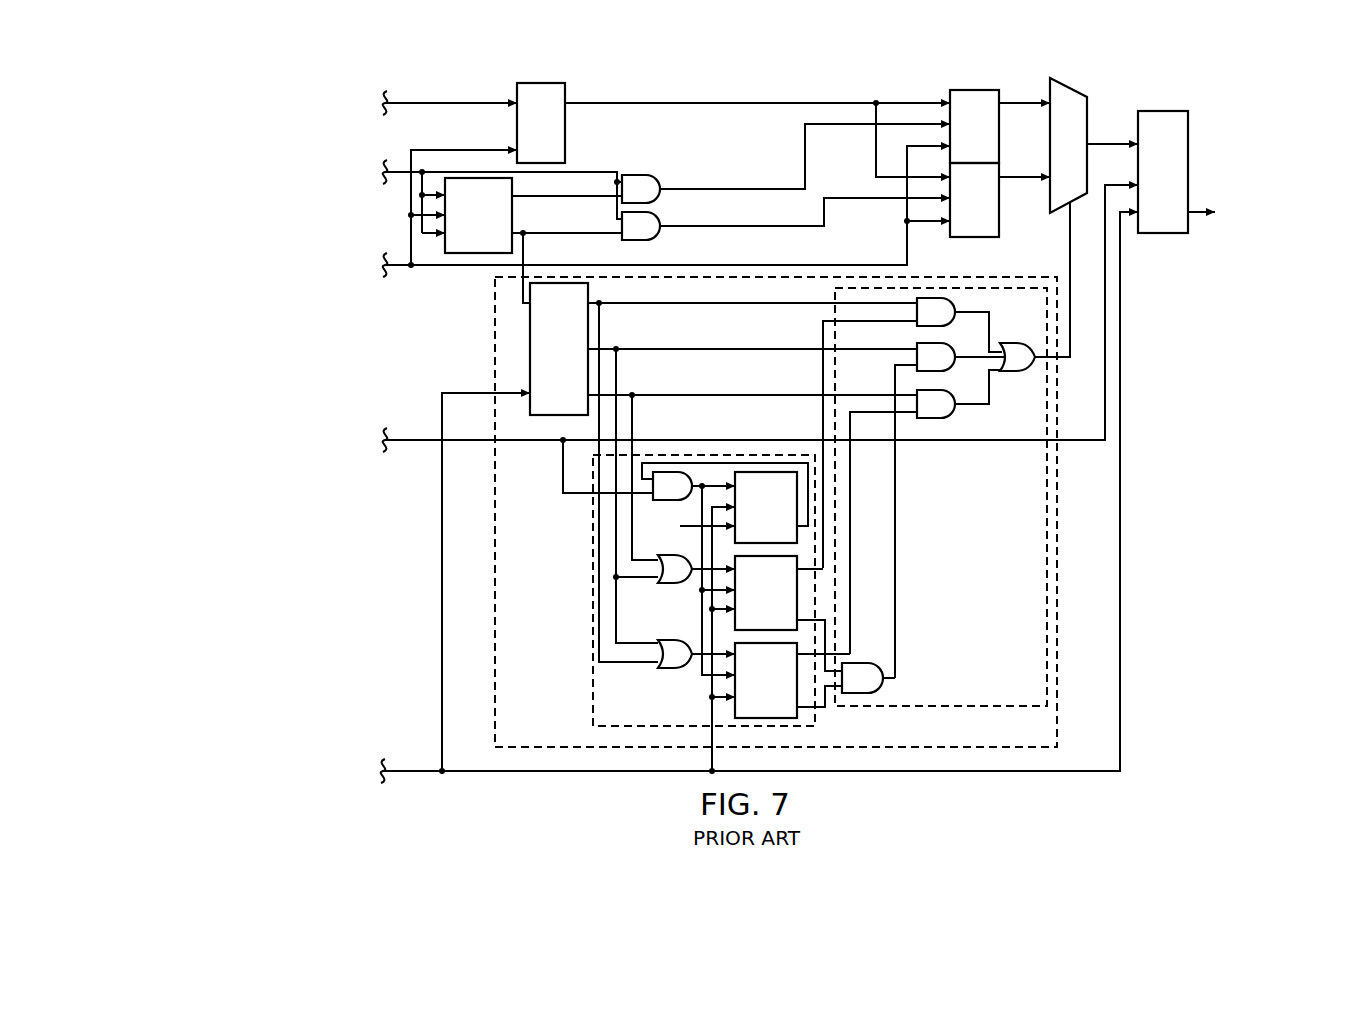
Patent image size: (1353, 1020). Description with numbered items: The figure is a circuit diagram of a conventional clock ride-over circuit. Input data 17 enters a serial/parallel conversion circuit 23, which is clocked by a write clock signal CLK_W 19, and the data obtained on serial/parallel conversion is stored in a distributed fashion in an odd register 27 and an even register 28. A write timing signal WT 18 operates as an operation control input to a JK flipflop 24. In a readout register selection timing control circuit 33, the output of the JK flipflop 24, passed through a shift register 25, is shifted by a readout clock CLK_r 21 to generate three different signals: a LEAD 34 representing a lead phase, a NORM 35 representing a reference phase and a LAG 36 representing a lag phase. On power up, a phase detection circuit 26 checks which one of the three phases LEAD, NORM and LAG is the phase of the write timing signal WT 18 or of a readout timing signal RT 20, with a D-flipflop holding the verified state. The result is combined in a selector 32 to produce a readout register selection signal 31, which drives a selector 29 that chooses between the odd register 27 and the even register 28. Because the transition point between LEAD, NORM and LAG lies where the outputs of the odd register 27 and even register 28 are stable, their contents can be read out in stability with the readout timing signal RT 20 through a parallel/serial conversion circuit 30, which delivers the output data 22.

The input data 17 is at (437, 102).
The write timing signal WT 18 is at (390, 172).
The write clock signal CLK_W 19 is at (390, 265).
The readout timing signal RT 20 is at (410, 438).
The readout clock CLK_r 21 is at (410, 769).
The output data 22 is at (1267, 211).
The serial/parallel conversion circuit 23 is at (565, 105).
The JK flipflop 24 is at (468, 253).
The shift register 25 is at (530, 350).
The phase detection circuit 26 is at (590, 535).
The odd register 27 is at (975, 90).
The even register 28 is at (986, 213).
The selector 1 29 is at (1083, 58).
The parallel/serial conversion circuit 30 is at (1237, 80).
The readout register selection signal 31 is at (1072, 333).
The selector 2 32 is at (1057, 493).
The readout register selection timing control circuit 33 is at (1057, 687).
The LEAD 34 is at (665, 305).
The NORM 35 is at (665, 350).
The LAG 36 is at (665, 396).